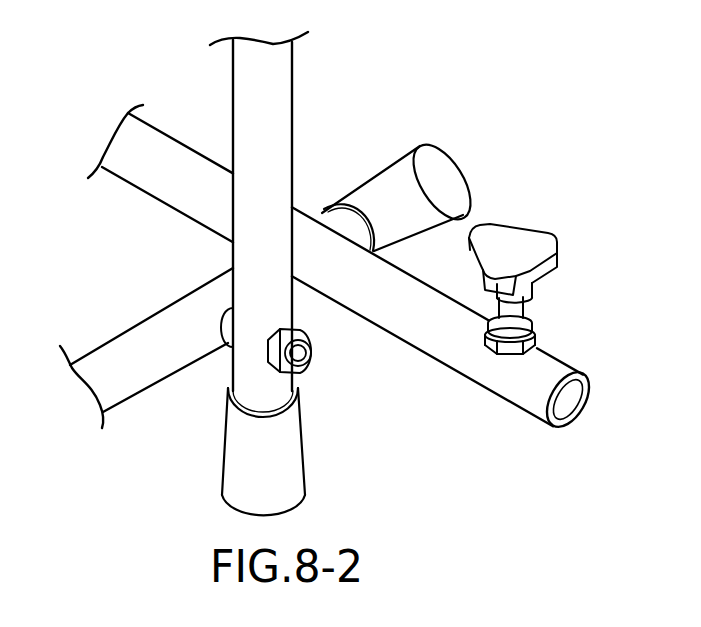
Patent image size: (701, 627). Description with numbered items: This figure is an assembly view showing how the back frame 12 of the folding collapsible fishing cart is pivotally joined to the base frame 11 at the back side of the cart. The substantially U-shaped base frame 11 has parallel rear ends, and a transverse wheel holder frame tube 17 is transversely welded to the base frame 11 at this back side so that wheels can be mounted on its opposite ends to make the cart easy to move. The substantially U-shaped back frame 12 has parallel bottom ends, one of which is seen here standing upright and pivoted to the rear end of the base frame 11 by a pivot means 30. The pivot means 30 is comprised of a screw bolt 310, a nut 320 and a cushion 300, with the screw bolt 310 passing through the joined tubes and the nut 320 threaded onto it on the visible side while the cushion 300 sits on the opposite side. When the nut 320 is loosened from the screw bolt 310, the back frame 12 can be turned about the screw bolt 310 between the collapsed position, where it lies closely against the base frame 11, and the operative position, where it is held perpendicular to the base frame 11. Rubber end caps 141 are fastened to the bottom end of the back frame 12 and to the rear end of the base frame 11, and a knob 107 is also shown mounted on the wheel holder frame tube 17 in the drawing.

The base frame 11 is at (128, 337).
The back frame 12 is at (281, 117).
The transverse wheel holder frame tube 17 is at (553, 363).
The pivot means 30 is at (325, 401).
The knob 107 is at (515, 238).
The rubber end cap 141 is at (447, 168).
The cushion 300 is at (225, 347).
The screw bolt 310 is at (302, 362).
The nut 320 is at (307, 337).